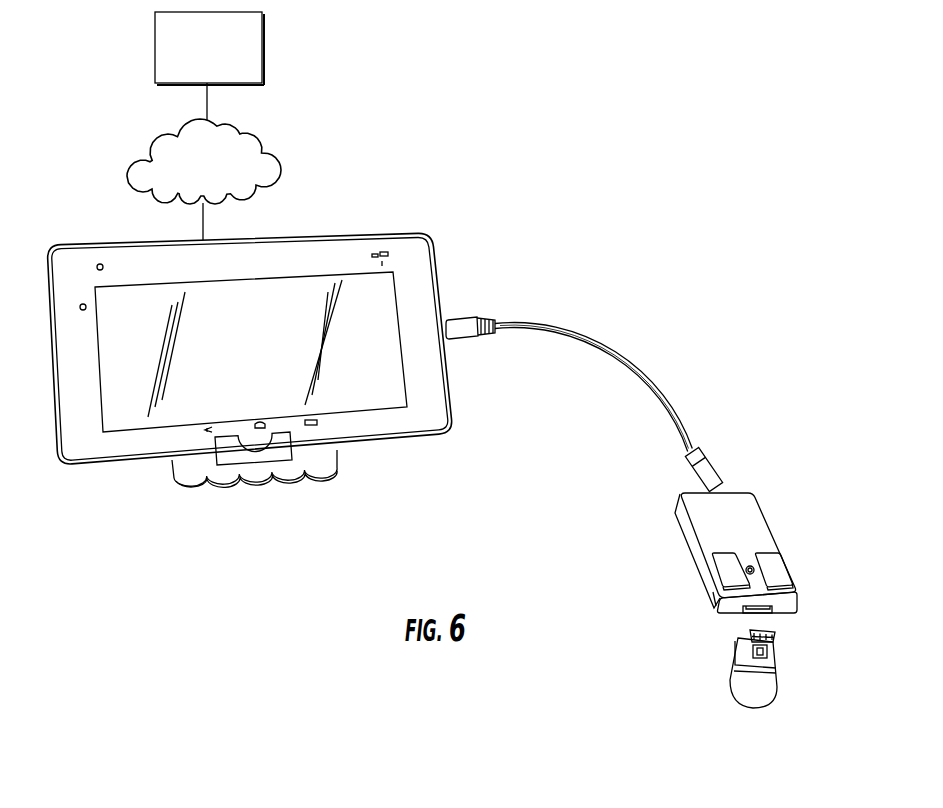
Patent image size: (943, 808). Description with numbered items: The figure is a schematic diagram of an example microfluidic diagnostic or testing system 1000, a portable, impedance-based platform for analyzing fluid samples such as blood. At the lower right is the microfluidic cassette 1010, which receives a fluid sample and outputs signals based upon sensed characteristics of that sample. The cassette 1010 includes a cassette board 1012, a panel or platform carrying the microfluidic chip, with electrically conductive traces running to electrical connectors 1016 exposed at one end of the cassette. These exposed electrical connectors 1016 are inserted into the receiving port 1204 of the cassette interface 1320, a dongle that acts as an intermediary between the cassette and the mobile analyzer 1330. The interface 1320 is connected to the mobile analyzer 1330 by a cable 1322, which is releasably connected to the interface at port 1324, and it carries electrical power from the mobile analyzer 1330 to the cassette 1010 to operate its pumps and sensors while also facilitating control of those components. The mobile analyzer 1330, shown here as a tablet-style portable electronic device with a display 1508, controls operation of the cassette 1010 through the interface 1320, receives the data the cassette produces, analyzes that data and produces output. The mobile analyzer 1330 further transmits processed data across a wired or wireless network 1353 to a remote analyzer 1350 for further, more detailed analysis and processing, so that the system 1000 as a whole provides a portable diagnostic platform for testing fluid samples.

The microfluidic diagnostic or testing system 1000 is at (678, 244).
The remote analyzer 1350 is at (263, 43).
The network 1353 is at (280, 182).
The mobile analyzer 1330 is at (292, 367).
The display screen 1508 is at (367, 388).
The port 1324 is at (450, 330).
The cable 1322 is at (632, 366).
The cassette interface 1320 is at (753, 538).
The receiving port 1204 is at (765, 607).
The microfluidic cassette 1010 is at (739, 696).
The cassette board 1012 is at (750, 632).
The electrical connectors 1016 is at (792, 653).